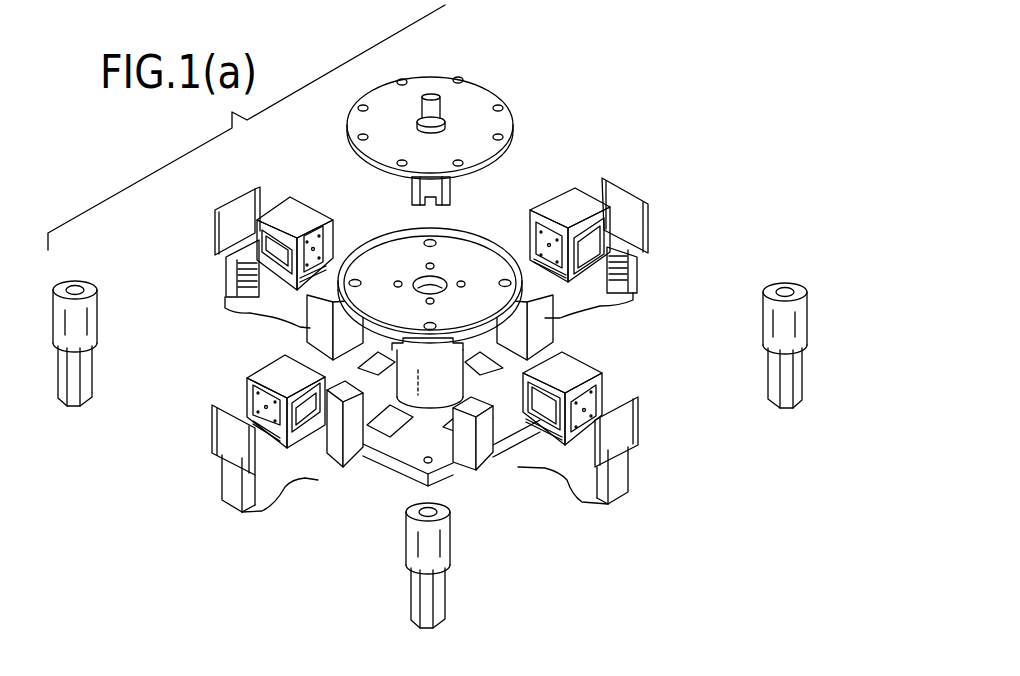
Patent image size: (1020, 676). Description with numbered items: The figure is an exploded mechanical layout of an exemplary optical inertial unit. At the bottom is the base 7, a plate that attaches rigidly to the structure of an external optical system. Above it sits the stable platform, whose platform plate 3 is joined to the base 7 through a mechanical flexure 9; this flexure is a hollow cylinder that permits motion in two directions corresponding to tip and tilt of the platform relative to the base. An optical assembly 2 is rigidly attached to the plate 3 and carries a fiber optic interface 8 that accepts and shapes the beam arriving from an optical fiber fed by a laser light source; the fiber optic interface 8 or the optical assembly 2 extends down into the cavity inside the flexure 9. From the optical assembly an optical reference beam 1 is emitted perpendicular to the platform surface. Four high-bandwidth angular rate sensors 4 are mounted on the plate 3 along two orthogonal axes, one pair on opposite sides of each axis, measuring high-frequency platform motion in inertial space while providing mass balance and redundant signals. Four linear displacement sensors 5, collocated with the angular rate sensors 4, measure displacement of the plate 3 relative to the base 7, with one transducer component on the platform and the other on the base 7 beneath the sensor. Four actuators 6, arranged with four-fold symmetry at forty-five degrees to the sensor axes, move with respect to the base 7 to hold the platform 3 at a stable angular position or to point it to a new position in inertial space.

The optical reference beam 1 is at (443, 108).
The optical assembly 2 is at (437, 79).
The platform plate 3 is at (392, 237).
The angular rate sensor 4 is at (291, 207).
The linear displacement sensor 5 is at (272, 317).
The actuator 6 is at (96, 310).
The base 7 is at (400, 455).
The fiber optic interface 8 is at (435, 187).
The mechanical flexure 9 is at (437, 393).